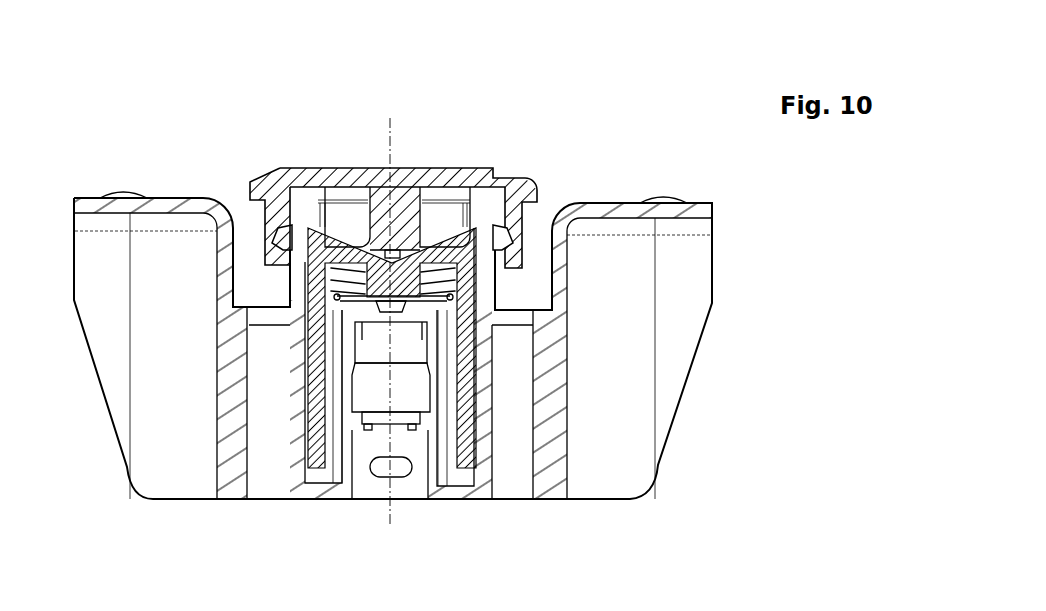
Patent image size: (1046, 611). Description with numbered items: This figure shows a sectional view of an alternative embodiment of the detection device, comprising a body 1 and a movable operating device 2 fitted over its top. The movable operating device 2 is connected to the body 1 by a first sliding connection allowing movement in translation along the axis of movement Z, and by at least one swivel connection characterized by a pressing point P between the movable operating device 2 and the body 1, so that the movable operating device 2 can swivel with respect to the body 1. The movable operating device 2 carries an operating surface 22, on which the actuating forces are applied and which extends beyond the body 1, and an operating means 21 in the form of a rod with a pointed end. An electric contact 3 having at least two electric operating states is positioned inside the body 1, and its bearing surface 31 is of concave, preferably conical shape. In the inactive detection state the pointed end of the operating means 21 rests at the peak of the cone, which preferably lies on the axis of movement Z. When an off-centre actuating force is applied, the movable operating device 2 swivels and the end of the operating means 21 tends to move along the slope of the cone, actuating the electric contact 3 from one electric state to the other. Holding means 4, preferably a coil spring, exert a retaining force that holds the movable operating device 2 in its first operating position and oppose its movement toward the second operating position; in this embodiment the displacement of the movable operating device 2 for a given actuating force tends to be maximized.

The body 1 is at (487, 445).
The movable operating device 2 is at (438, 184).
The operating means 21 is at (383, 238).
The operating surface 22 is at (473, 172).
The bearing surface 31 is at (300, 227).
The electric contact 3 is at (412, 358).
The holding means 4 is at (446, 287).
The pressing point P is at (500, 249).
The axis of movement Z is at (400, 120).